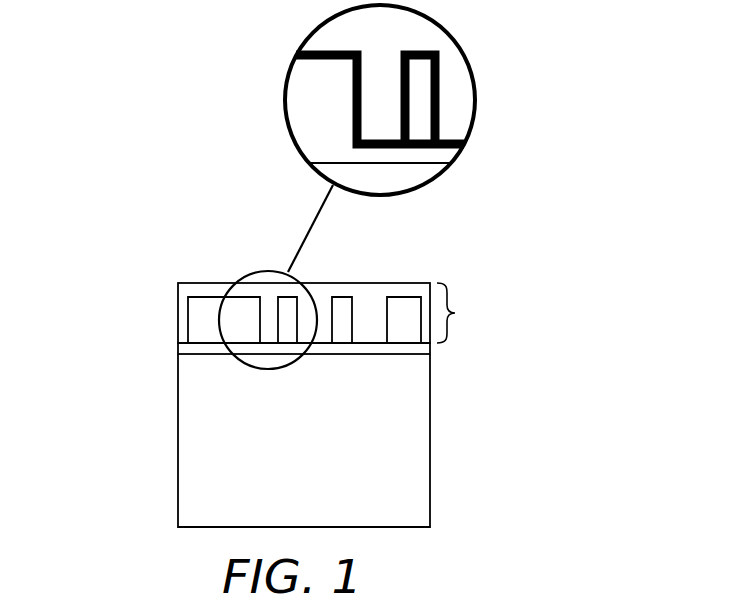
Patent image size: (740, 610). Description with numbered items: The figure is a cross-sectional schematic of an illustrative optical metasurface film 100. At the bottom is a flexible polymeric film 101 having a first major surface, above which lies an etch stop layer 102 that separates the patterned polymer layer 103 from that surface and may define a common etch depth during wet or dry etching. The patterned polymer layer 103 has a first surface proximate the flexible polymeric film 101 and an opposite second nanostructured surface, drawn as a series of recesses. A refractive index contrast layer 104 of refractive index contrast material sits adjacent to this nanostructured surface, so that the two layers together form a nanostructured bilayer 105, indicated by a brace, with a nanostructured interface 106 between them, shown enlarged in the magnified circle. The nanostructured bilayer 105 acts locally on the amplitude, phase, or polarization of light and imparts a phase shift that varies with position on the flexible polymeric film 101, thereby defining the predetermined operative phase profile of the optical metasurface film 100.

The optical metasurface film 100 is at (122, 105).
The flexible polymeric film 101 is at (178, 443).
The etch stop layer 102 is at (178, 345).
The patterned polymer layer 103 is at (200, 315).
The refractive index contrast layer 104 is at (178, 287).
The nanostructured bilayer 105 is at (467, 313).
The nanostructured interface 106 is at (440, 88).